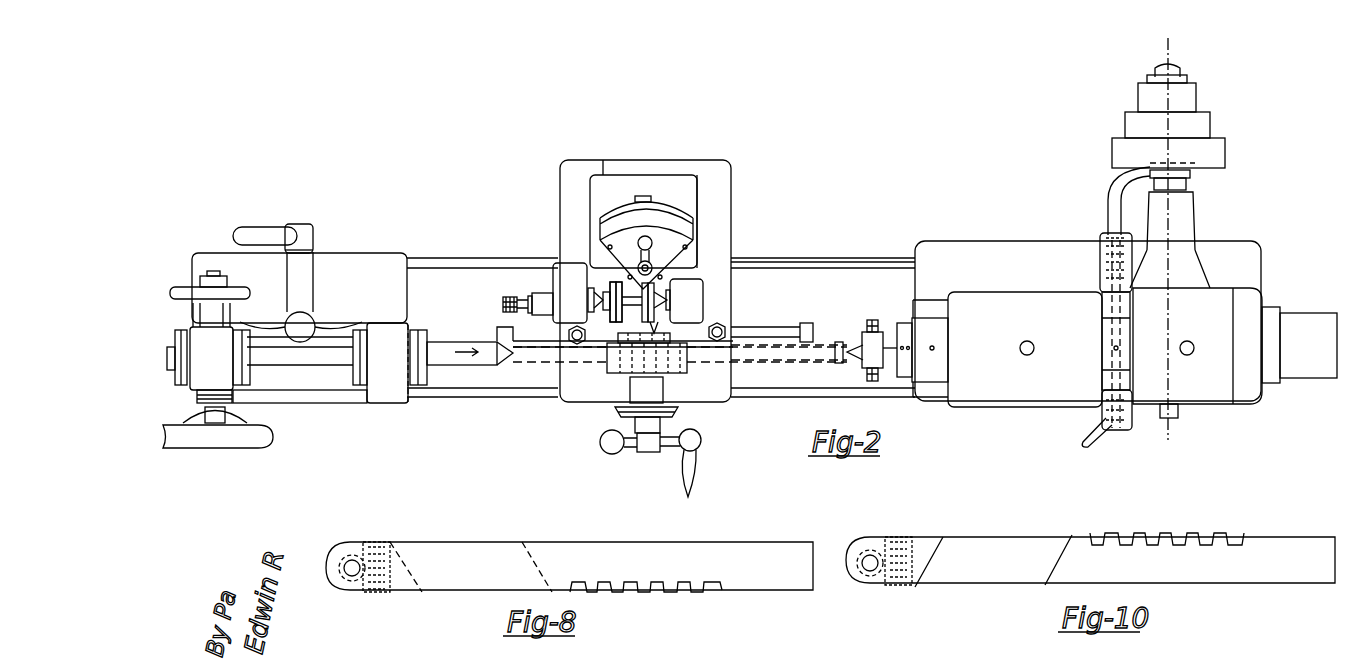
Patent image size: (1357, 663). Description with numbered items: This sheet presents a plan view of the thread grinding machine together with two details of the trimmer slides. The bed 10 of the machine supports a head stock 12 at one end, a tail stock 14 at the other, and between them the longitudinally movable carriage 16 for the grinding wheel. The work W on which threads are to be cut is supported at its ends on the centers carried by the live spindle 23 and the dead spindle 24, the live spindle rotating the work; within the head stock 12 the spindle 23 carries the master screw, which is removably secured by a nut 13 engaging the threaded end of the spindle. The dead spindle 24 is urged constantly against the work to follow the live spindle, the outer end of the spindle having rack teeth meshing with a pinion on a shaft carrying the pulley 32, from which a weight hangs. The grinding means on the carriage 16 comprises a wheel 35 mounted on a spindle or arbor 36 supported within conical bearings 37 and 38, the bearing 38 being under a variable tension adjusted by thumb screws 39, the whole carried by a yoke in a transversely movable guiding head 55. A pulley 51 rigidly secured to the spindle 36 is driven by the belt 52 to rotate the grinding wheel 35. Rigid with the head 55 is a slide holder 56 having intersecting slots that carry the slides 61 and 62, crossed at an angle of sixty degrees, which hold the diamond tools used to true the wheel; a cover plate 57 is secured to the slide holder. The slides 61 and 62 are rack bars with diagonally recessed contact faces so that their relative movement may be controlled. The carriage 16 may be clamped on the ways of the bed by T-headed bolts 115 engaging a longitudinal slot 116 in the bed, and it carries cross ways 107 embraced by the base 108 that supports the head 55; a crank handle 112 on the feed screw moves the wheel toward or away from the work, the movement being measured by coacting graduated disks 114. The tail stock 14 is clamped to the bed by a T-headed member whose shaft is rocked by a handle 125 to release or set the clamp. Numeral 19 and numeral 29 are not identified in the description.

In FIG. 2, the bed 10 is at (793, 258).
In FIG. 2, the guide rod 19 is at (823, 243).
In FIG. 2, the head stock 12 is at (1117, 324).
In FIG. 2, the nut 13 is at (1174, 42).
In FIG. 2, the tail stock 14 is at (309, 327).
In FIG. 2, the carriage 16 is at (715, 221).
In FIG. 2, the live spindle 23 is at (885, 343).
In FIG. 2, the dead spindle 24 is at (470, 334).
In FIG. 2, the stacked weights 29 is at (1215, 160).
In FIG. 2, the pulley 32 is at (240, 289).
In FIG. 2, the grinding wheel 35 is at (732, 308).
In FIG. 2, the spindle or arbor 36 is at (639, 309).
In FIG. 2, the conical bearing 37 is at (684, 301).
In FIG. 2, the conical bearing 38 is at (559, 293).
In FIG. 2, the thumb screws 39 is at (503, 297).
In FIG. 2, the pulley 51 is at (610, 318).
In FIG. 2, the belt 52 is at (617, 282).
In FIG. 2, the guiding head 55 is at (663, 275).
In FIG. 2, the slide holder 56 is at (646, 242).
In FIG. 2, the cover plate 57 is at (658, 255).
In FIG. 8, the slide 61 is at (569, 567).
In FIG. 10, the slide 62 is at (1090, 560).
In FIG. 2, the cross ways 107 is at (641, 176).
In FIG. 2, the base 108 is at (643, 221).
In FIG. 2, the crank handle 112 is at (697, 471).
In FIG. 2, the graduated disks 114 is at (675, 413).
In FIG. 2, the T-headed bolts 115 is at (732, 321).
In FIG. 2, the slot 116 is at (512, 340).
In FIG. 2, the handle 125 is at (252, 208).
In FIG. 2, the work W is at (620, 370).